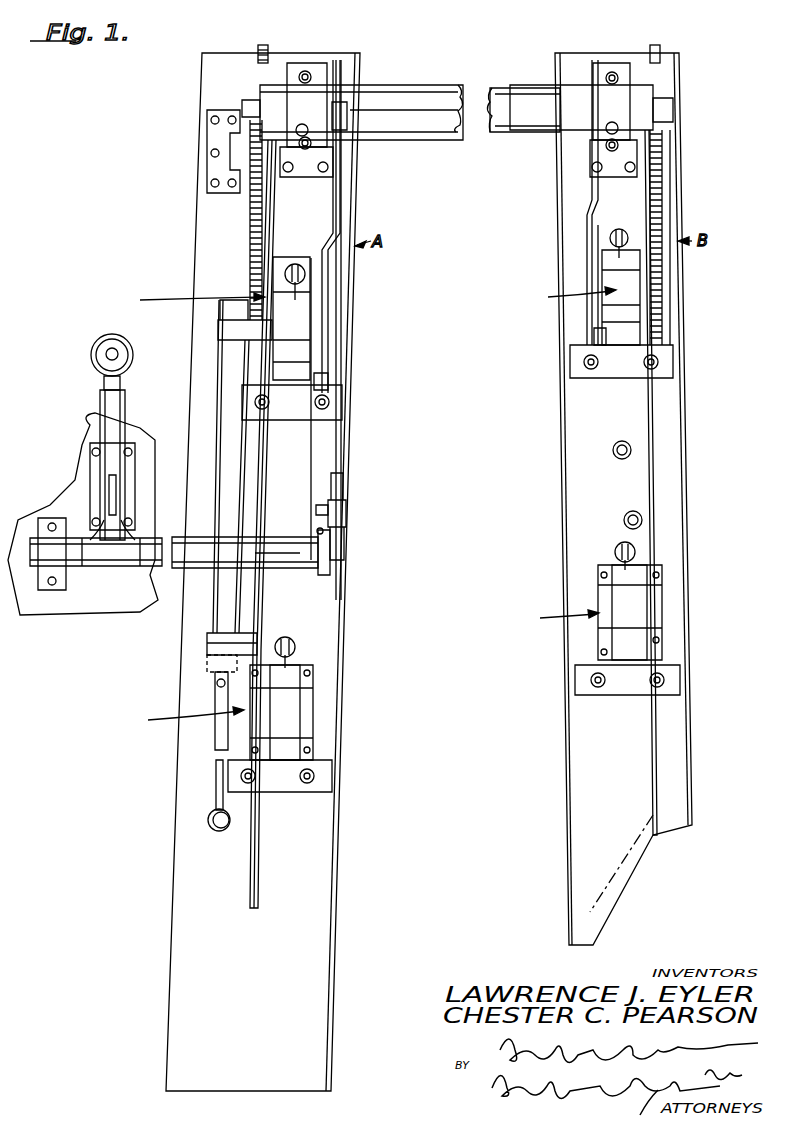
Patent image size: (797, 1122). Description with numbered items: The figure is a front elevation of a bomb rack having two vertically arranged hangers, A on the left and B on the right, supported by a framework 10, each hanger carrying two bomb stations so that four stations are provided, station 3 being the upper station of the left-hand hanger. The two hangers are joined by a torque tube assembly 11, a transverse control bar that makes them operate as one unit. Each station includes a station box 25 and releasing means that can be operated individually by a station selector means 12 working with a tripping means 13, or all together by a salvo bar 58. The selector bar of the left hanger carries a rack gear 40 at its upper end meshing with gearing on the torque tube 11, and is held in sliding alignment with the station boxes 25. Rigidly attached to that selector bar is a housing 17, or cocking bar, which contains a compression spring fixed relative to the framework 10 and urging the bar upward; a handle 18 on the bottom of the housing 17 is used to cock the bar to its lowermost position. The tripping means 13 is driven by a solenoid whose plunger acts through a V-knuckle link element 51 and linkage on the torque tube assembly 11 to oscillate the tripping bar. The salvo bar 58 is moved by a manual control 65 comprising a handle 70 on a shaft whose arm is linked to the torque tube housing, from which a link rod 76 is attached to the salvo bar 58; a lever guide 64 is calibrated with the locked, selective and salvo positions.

The station 3 is at (379, 190).
The framework 10 is at (330, 962).
The torque tube assembly 11 is at (410, 140).
The station selector means 12 is at (256, 893).
The tripping means 13 is at (260, 628).
The housing 17 is at (208, 622).
The handle 18 is at (208, 830).
The station boxes 25 is at (313, 328).
The rack gear 40 is at (250, 212).
The V-knuckle link element 51 is at (240, 158).
The salvo bar 58 is at (318, 464).
The lever guide 64 is at (102, 568).
The manual control 65 is at (85, 474).
The handle 70 is at (125, 410).
The link rod 76 is at (318, 265).